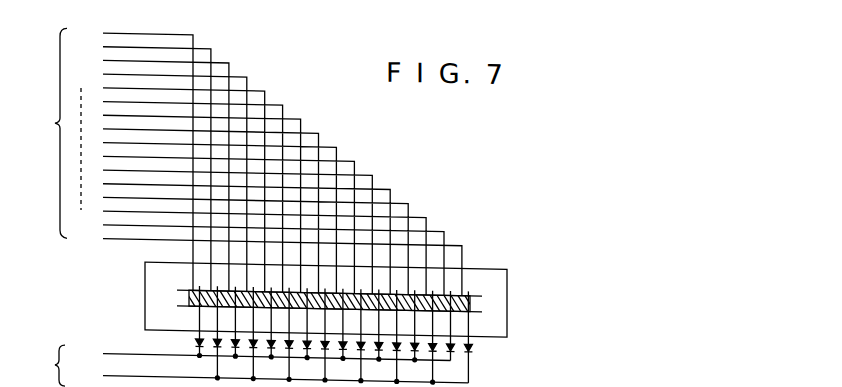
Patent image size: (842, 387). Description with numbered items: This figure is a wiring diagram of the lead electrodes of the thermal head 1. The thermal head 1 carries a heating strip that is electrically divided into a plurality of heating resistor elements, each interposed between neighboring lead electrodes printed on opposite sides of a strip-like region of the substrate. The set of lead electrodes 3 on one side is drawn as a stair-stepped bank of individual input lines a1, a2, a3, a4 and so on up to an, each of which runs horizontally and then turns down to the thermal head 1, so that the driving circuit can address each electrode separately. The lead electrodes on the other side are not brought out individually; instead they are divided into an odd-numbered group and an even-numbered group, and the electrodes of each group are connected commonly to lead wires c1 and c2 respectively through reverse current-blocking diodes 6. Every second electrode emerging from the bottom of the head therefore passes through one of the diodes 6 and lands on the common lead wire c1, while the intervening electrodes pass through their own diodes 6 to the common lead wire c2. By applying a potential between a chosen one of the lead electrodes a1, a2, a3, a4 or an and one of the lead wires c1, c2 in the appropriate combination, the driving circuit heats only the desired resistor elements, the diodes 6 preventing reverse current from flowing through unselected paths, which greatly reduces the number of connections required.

The lead electrodes 3 is at (53, 122).
The thermal head 1 is at (145, 289).
The reverse current-blocking diodes 6 is at (471, 335).
The lead electrode 3a1 a1 is at (136, 158).
The lead electrode 3a2 a2 is at (145, 166).
The lead electrode 3a3 a3 is at (154, 173).
The lead electrode 3a4 a4 is at (163, 181).
The lead electrode 3an an is at (267, 263).
The lead wire C1 c1 is at (263, 361).
The lead wire C2 c2 is at (271, 378).